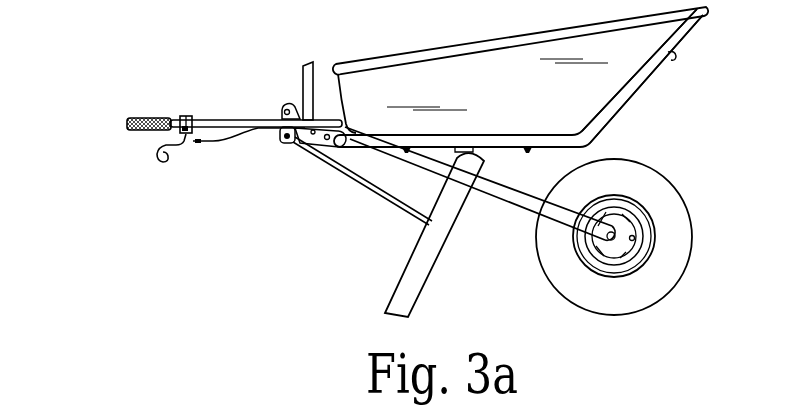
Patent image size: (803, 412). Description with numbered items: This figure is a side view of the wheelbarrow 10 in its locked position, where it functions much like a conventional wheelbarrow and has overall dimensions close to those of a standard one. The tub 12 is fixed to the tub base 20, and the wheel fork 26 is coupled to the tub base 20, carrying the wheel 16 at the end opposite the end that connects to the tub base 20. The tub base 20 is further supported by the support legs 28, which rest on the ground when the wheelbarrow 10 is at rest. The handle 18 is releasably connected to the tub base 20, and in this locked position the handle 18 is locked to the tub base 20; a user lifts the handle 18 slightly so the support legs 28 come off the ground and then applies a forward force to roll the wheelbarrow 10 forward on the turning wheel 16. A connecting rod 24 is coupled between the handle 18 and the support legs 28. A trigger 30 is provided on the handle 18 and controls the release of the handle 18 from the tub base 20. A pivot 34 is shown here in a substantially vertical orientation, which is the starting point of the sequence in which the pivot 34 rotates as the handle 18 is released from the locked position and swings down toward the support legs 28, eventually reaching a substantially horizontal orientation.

The wheelbarrow 10 is at (245, 53).
The tub 12 is at (496, 77).
The wheel 16 is at (672, 265).
The handle 18 is at (217, 130).
The tub base 20 is at (641, 91).
The connecting rod 24 is at (360, 184).
The wheel fork 26 is at (515, 189).
The support legs 28 is at (423, 287).
The trigger 30 is at (185, 143).
The pivot 34 is at (283, 141).